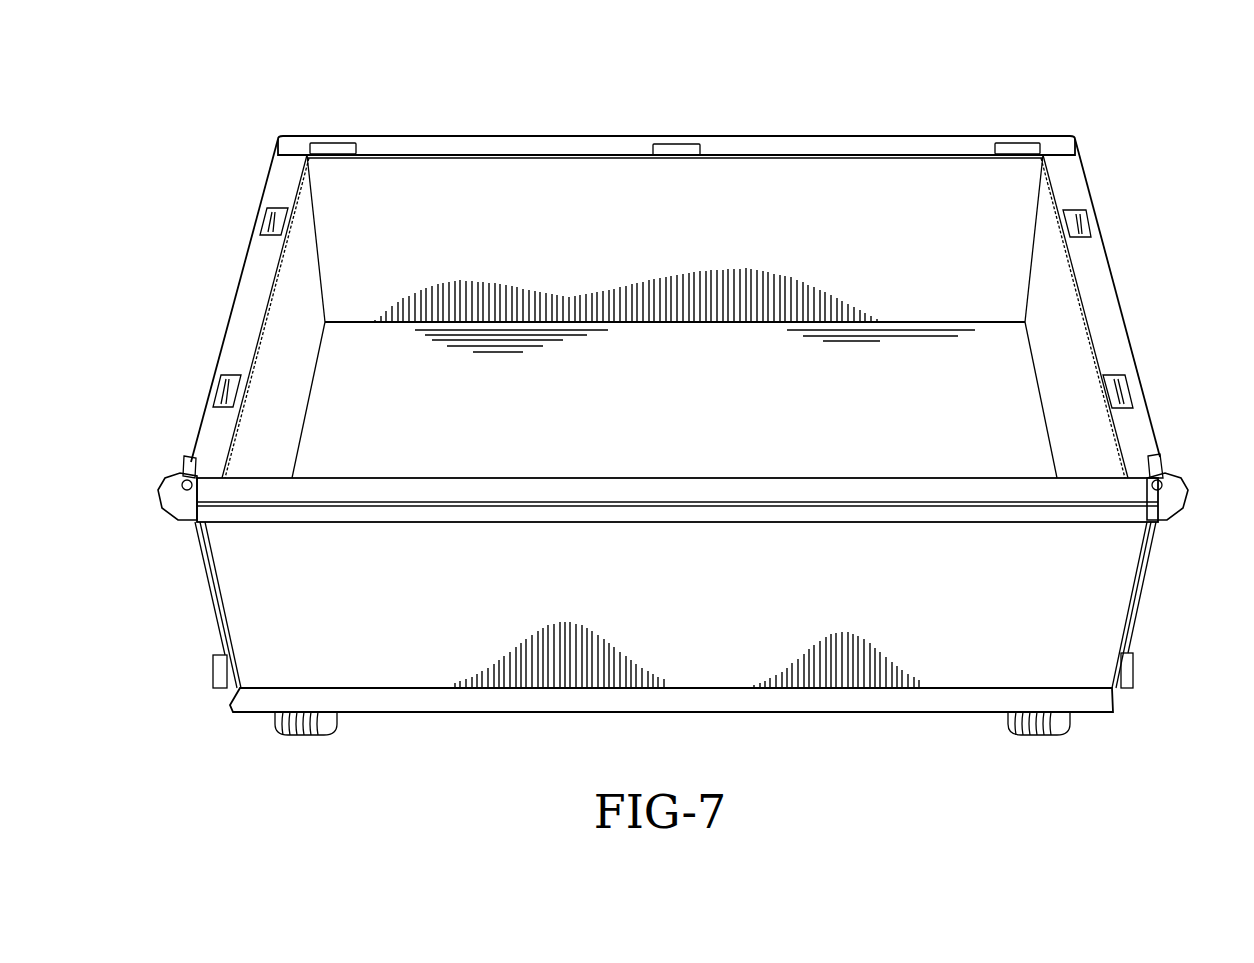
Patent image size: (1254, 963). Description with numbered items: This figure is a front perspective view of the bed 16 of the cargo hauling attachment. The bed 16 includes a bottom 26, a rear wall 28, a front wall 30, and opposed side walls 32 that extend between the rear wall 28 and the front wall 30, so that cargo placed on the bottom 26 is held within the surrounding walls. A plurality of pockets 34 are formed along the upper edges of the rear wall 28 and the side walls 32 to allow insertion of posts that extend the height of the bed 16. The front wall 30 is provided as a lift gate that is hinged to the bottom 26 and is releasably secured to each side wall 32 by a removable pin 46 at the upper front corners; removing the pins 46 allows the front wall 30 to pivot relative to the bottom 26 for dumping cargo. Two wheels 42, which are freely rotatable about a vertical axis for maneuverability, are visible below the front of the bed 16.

The bed 16 is at (753, 711).
The bottom 26 is at (662, 423).
The rear wall 28 is at (662, 241).
The front wall 30 is at (661, 610).
The side walls 32 is at (274, 363).
The pockets 34 is at (672, 148).
The wheels 42 is at (300, 718).
The removable pin 46 is at (185, 480).